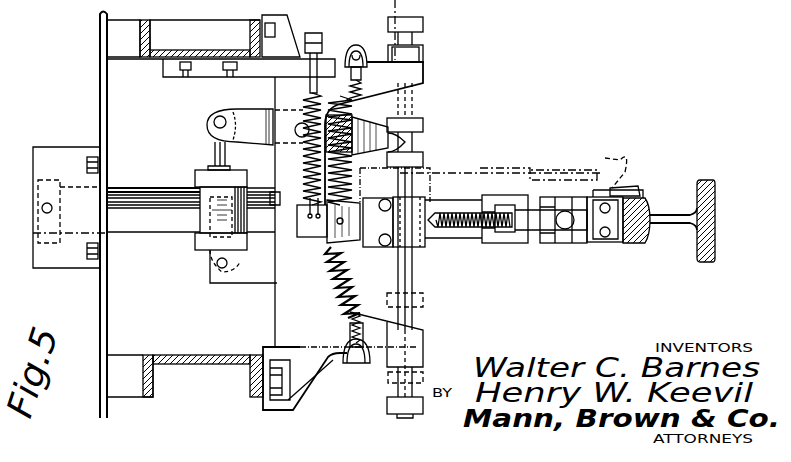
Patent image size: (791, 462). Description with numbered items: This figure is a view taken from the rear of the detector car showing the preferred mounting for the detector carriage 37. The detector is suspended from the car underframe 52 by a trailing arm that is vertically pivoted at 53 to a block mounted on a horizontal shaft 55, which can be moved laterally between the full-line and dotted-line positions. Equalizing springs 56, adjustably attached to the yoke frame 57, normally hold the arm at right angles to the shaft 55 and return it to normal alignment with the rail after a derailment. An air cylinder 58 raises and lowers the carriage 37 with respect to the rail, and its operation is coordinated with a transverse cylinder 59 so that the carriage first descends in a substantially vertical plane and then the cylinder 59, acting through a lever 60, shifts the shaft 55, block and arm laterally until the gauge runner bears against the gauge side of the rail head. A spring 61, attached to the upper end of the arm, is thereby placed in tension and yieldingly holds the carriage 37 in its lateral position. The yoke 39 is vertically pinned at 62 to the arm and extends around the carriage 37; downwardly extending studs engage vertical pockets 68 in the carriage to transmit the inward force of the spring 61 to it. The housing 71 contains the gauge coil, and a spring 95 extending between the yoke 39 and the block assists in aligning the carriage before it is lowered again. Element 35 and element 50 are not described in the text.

The latch 35 is at (613, 192).
The carriage 37 is at (580, 242).
The yoke 39 is at (545, 243).
The heavy spring 50 is at (343, 287).
The car underframe 52 is at (428, 238).
The vertical pivot 53 is at (340, 238).
The horizontal shaft 55 is at (397, 280).
The equalizing springs 56 is at (357, 102).
The yoke frame 57 is at (380, 70).
The air cylinder 58 is at (130, 187).
The transverse cylinder 59 is at (193, 225).
The lever 60 is at (260, 123).
The spring 61 is at (306, 96).
The vertical pin 62 is at (207, 185).
The vertical pockets 68 is at (497, 243).
The housing for the gauge coil 71 is at (645, 192).
The spring 95 is at (456, 230).